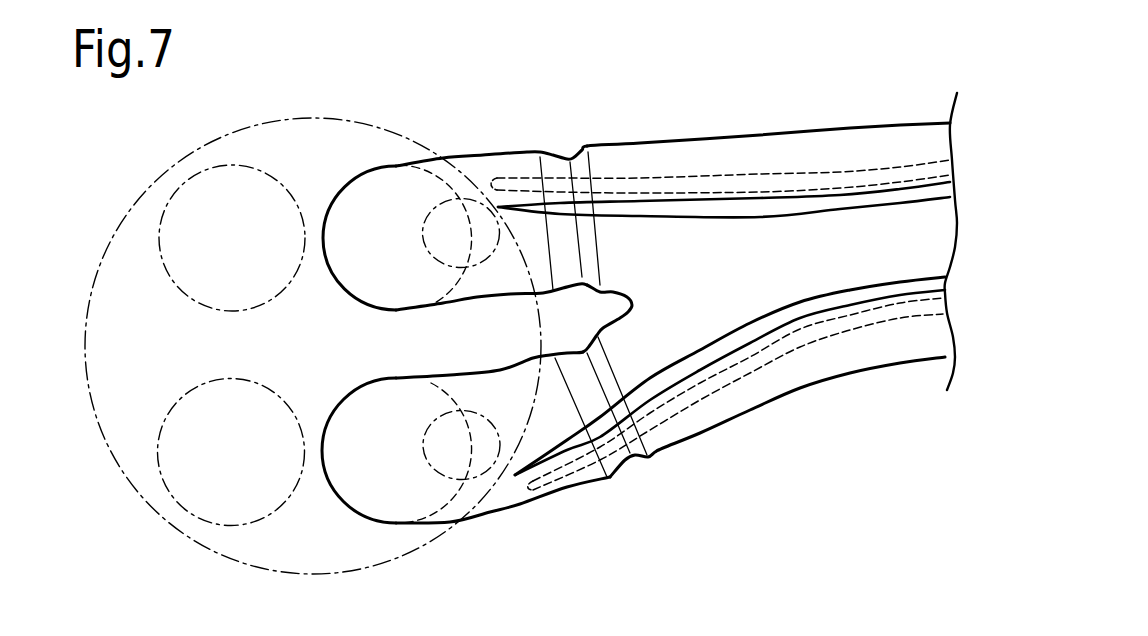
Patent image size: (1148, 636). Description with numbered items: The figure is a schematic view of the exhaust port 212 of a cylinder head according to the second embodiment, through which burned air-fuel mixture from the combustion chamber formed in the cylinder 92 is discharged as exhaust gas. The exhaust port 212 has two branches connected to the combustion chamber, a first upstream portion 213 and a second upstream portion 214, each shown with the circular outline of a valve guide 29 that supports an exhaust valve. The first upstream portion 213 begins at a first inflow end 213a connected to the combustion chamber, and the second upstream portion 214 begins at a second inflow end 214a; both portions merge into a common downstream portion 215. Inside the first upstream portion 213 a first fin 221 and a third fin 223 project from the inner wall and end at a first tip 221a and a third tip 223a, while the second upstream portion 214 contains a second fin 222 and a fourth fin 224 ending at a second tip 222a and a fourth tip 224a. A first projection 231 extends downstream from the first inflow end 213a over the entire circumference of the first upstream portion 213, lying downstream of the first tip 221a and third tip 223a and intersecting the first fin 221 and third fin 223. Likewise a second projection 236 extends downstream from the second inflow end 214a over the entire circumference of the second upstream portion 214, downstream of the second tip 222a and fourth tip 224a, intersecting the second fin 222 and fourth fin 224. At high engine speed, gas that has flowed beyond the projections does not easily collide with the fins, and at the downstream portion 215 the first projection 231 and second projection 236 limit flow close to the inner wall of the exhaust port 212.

The valve guide 29 is at (477, 267).
The cylinder 92 is at (243, 558).
The exhaust port 212 is at (702, 122).
The first upstream portion 213 is at (440, 237).
The first inflow end 213a is at (334, 197).
The second upstream portion 214 is at (451, 451).
The second inflow end 214a is at (337, 498).
The downstream portion 215 is at (800, 373).
The first fin 221 is at (720, 220).
The first tip 221a is at (497, 205).
The second fin 222 is at (673, 350).
The second tip 222a is at (513, 476).
The third fin 223 is at (742, 178).
The third tip 223a is at (496, 172).
The fourth fin 224 is at (717, 377).
The fourth tip 224a is at (528, 492).
The first projection 231 is at (587, 165).
The second projection 236 is at (640, 437).